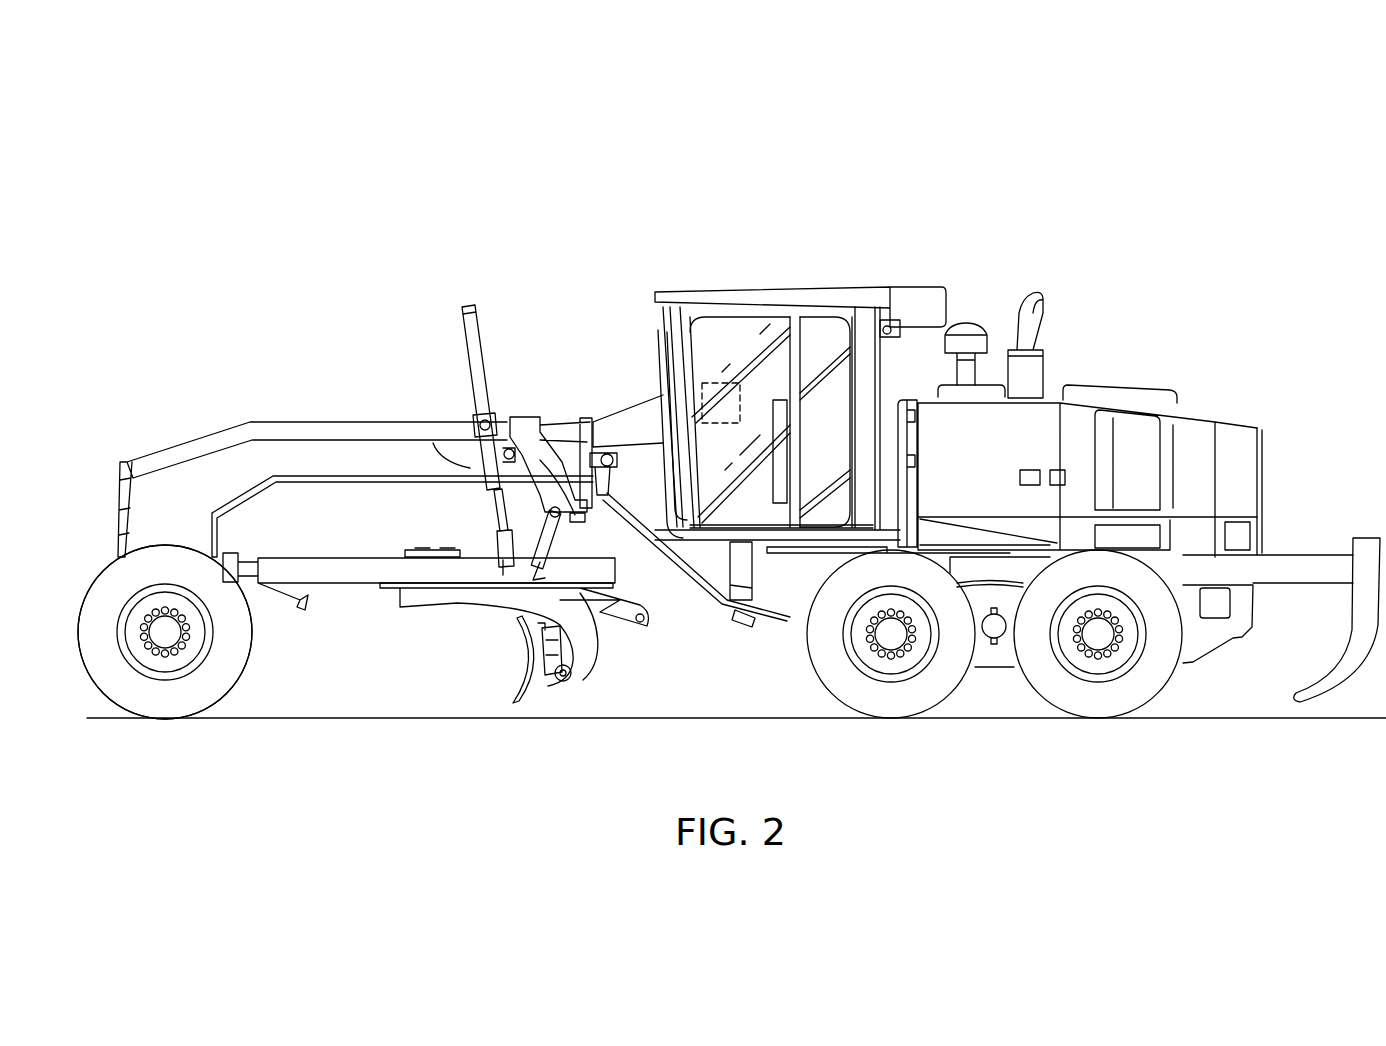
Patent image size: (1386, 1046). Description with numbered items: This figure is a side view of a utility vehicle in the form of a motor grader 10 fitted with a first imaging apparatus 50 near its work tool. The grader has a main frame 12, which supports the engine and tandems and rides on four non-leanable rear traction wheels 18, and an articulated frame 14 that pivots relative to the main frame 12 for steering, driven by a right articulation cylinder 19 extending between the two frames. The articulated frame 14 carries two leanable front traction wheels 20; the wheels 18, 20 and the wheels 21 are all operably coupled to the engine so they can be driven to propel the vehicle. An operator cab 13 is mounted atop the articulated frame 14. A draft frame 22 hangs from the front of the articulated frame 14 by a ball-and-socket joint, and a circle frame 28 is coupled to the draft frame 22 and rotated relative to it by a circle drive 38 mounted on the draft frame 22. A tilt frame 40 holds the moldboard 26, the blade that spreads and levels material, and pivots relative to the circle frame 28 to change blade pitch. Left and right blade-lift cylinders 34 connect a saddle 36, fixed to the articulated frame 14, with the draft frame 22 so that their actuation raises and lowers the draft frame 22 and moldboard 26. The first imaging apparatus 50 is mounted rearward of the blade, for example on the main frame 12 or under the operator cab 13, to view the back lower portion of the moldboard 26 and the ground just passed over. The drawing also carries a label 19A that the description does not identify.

The motor grader 10 is at (864, 119).
The main frame 12 is at (780, 577).
The operator cab 13 is at (712, 290).
The articulated frame 14 is at (345, 428).
The rear traction wheels 18 is at (1060, 687).
The right articulation cylinder 19 is at (1033, 437).
The tandem drive 19A is at (998, 695).
The front traction wheels 20 is at (135, 688).
The wheels 21 is at (183, 688).
The draft frame 22 is at (333, 578).
The moldboard 26 is at (540, 693).
The circle frame 28 is at (580, 625).
The blade-lift cylinders 34 is at (470, 330).
The saddle 36 is at (527, 423).
The circle drive 38 is at (420, 552).
The tilt frame 40 is at (560, 683).
The first imaging apparatus 50 is at (740, 617).